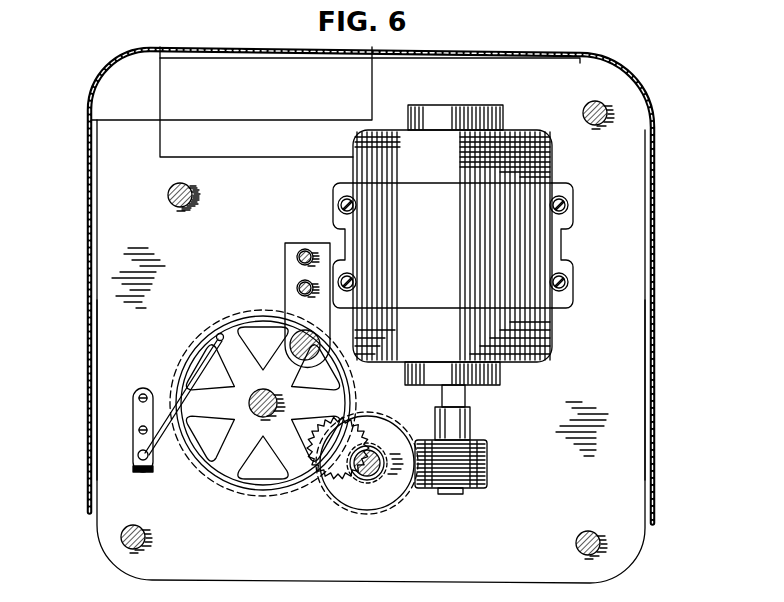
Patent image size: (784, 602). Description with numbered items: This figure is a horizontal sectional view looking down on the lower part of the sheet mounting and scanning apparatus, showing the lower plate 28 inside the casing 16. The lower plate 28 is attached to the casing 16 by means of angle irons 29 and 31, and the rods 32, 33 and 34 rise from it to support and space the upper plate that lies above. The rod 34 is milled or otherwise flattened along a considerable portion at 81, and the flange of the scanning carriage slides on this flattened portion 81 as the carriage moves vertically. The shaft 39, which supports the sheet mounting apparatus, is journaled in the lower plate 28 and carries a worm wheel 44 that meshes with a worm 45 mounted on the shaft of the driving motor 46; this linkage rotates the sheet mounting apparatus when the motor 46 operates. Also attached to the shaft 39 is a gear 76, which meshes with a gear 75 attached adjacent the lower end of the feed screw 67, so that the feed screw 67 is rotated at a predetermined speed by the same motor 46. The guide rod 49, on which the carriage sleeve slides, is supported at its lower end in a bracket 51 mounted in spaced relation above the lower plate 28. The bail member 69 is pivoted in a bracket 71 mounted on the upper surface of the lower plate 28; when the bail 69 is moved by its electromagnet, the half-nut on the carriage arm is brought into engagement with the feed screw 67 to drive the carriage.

The casing 16 is at (87, 182).
The lower plate 28 is at (361, 581).
The angle iron 29 is at (92, 386).
The angle iron 31 is at (655, 398).
The rod 32 is at (146, 538).
The rod 33 is at (577, 543).
The rod 34 is at (168, 195).
The flattened portion 81 is at (197, 195).
The driving motor 46 is at (538, 178).
The worm 45 is at (487, 471).
The worm wheel 44 is at (408, 491).
The shaft 39 is at (373, 456).
The gear 76 is at (335, 491).
The feed screw 67 is at (279, 398).
The gear 75 is at (310, 490).
The bracket 51 is at (290, 283).
The guide rod 49 is at (298, 335).
The bail member 69 is at (184, 401).
The bracket 71 is at (148, 473).